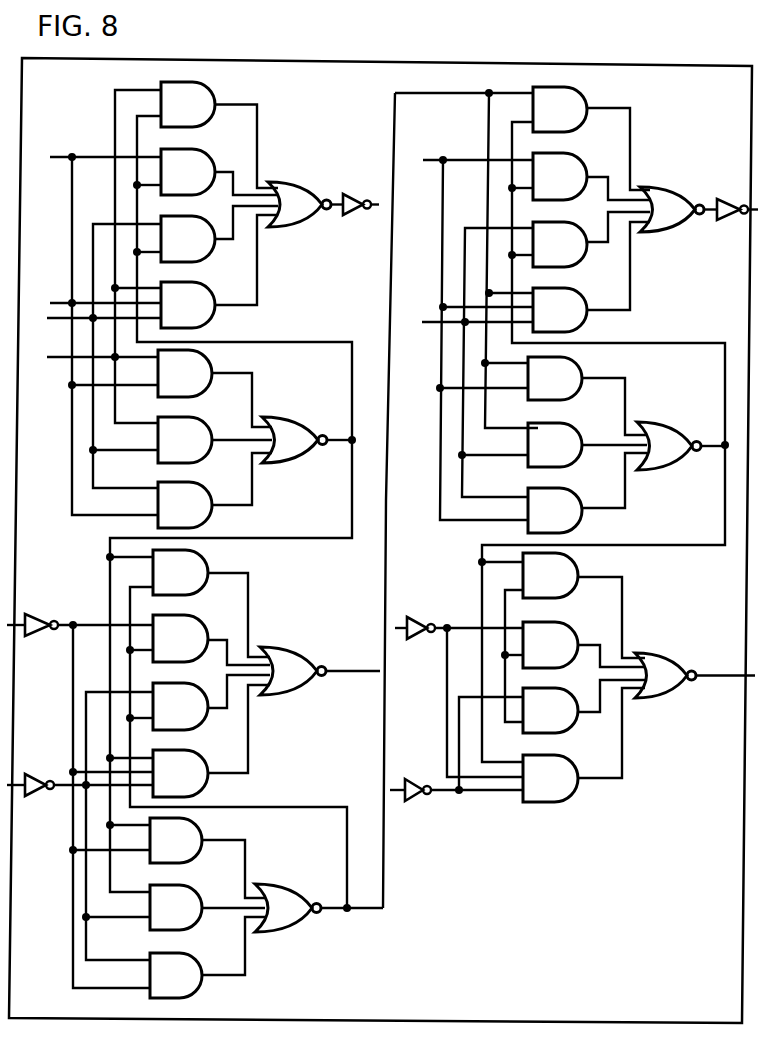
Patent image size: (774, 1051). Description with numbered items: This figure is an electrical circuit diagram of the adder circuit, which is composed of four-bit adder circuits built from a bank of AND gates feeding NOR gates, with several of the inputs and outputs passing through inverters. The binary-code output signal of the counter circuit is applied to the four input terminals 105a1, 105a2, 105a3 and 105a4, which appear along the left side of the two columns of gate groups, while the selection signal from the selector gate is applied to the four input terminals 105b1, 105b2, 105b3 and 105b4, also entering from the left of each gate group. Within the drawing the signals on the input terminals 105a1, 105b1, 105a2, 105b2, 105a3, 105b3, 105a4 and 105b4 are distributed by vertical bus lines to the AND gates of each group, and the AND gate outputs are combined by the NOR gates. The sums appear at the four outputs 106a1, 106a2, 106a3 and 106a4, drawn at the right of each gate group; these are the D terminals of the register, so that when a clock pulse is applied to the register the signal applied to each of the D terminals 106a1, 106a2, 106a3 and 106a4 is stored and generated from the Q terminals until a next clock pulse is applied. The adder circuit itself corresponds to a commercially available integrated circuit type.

The input terminal 105a1 is at (52, 156).
The input terminal 105b1 is at (54, 301).
The input terminal 105a2 is at (20, 622).
The input terminal 105b2 is at (15, 782).
The input terminal 105a3 is at (430, 153).
The input terminal 105b3 is at (422, 322).
The input terminal 105a4 is at (397, 626).
The input terminal 105b4 is at (392, 788).
The D terminal 106a1 is at (377, 200).
The D terminal 106a2 is at (366, 670).
The D terminal 106a3 is at (749, 205).
The D terminal 106a4 is at (730, 672).